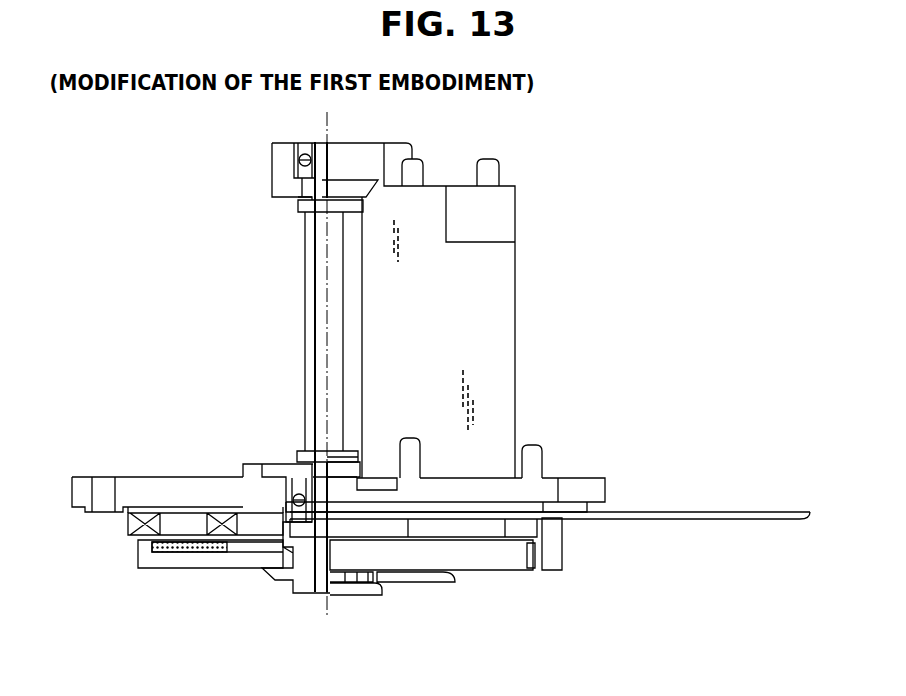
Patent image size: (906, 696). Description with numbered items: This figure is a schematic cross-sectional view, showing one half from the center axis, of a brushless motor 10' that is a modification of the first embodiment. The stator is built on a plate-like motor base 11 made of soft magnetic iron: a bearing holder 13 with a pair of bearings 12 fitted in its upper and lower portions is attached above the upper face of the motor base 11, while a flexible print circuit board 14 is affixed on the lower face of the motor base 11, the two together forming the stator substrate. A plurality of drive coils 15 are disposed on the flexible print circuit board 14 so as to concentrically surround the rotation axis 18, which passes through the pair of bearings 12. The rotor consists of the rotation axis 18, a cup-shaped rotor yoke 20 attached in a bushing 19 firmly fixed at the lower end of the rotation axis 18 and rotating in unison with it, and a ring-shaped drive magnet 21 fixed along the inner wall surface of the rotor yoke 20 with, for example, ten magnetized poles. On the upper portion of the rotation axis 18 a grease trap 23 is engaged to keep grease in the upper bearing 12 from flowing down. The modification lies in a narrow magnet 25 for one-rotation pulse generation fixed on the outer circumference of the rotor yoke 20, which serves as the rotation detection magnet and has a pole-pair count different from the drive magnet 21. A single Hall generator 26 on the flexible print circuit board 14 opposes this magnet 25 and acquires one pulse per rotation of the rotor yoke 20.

The brushless motor 10' is at (216, 362).
The motor base 11 is at (145, 505).
The bearings 12 is at (296, 158).
The bearing holder 13 is at (500, 318).
The flexible print circuit board 14 is at (177, 522).
The drive coils 15 is at (128, 524).
The rotation axis 18 is at (318, 318).
The bushing 19 is at (290, 576).
The rotor yoke 20 is at (200, 560).
The drive magnet 21 is at (160, 560).
The grease trap 23 is at (298, 210).
The magnet for one-rotation pulse generation 25 is at (530, 566).
The Hall generator 26 is at (557, 548).